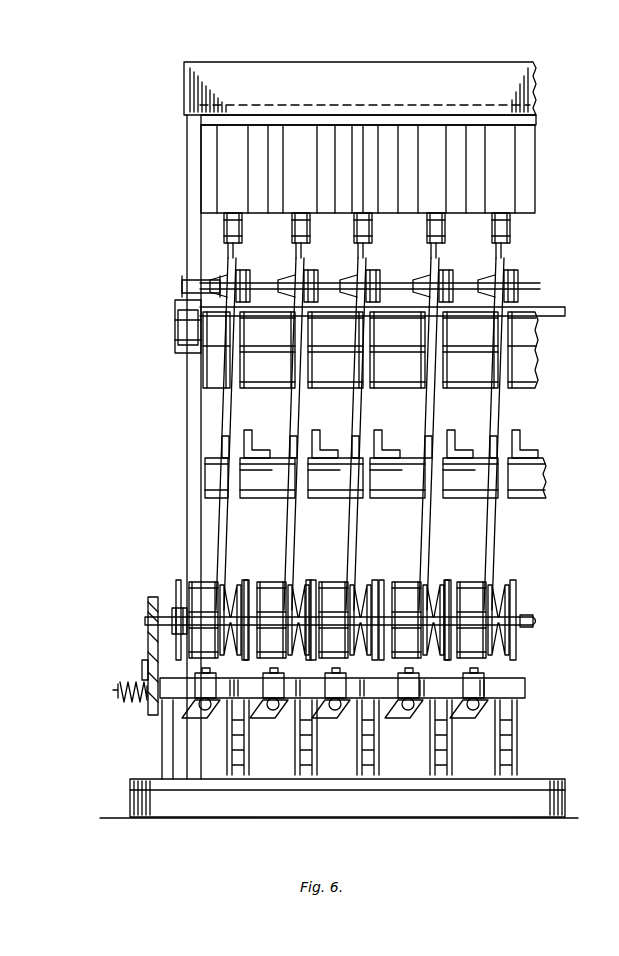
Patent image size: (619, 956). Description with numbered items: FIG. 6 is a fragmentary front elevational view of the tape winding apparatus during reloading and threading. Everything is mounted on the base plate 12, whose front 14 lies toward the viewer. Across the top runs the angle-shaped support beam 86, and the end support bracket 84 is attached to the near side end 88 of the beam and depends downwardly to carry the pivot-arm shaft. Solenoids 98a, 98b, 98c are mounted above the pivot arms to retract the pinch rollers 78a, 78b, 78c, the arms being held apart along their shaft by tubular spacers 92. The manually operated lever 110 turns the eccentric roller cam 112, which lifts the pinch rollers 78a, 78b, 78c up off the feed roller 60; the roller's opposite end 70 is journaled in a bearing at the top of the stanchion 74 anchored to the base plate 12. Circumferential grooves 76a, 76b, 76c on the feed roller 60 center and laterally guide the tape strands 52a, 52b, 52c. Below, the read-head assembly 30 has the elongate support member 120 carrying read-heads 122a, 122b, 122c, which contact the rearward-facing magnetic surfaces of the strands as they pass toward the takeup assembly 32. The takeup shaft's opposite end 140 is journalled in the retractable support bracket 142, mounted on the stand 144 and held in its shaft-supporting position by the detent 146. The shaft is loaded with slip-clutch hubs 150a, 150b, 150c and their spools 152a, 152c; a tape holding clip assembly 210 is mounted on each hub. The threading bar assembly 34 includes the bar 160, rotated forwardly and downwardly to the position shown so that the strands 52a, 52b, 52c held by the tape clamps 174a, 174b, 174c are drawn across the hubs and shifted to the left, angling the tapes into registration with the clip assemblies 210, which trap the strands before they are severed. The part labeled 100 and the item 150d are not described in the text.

The base plate 12 is at (540, 780).
The front 14 is at (292, 792).
The read-head assembly 30 is at (547, 434).
The takeup assembly 32 is at (512, 601).
The threading bar assembly 34 is at (404, 710).
The tape strand 52a is at (242, 434).
The tape strand 52b is at (311, 434).
The tape strand 52c is at (374, 434).
The feed roller 60 is at (548, 350).
The opposite end of feed roller 70 is at (205, 382).
The stanchion 74 is at (188, 455).
The groove 76a is at (205, 352).
The groove 76b is at (267, 350).
The groove 76c is at (335, 350).
The pinch roller 78a is at (240, 272).
The pinch roller 78b is at (311, 270).
The pinch roller 78c is at (376, 272).
The end support bracket 84 is at (186, 213).
The support beam 86 is at (282, 44).
The near side end of beam 88 is at (536, 120).
The tubular spacers 92 is at (212, 280).
The solenoid 98a is at (230, 157).
The solenoid 98b is at (300, 150).
The solenoid 98c is at (372, 140).
The bracket 100 is at (251, 228).
The manually operated lever 110 is at (178, 330).
The eccentric roller cam 112 is at (545, 328).
The support member 120 is at (551, 478).
The read-head 122a is at (173, 434).
The read-head 122b is at (268, 433).
The read-head 122c is at (335, 433).
The opposite end of takeup shaft 140 is at (146, 621).
The retractable support bracket 142 is at (150, 615).
The stand 144 is at (160, 745).
The detent 146 is at (118, 692).
The slip-clutch hub 150a is at (173, 599).
The slip-clutch hub 150b is at (265, 601).
The slip-clutch hub 150c is at (327, 600).
The drum flange 150d is at (318, 610).
The spool 152a is at (184, 588).
The spool 152c is at (383, 608).
The bar 160 is at (530, 688).
The tape clamp 174a is at (143, 721).
The tape clamp 174b is at (283, 721).
The tape clamp 174c is at (345, 721).
The tape holding clip assembly 210 is at (195, 618).